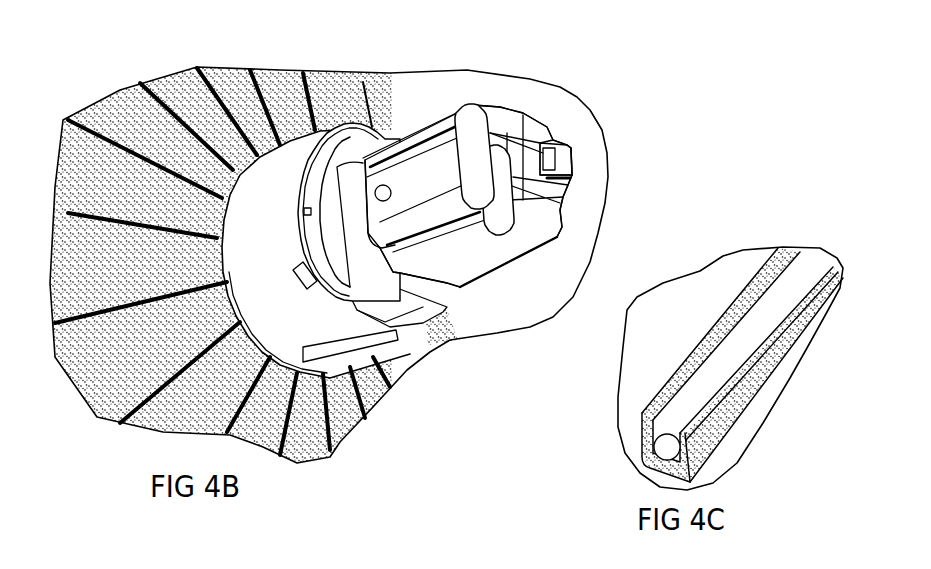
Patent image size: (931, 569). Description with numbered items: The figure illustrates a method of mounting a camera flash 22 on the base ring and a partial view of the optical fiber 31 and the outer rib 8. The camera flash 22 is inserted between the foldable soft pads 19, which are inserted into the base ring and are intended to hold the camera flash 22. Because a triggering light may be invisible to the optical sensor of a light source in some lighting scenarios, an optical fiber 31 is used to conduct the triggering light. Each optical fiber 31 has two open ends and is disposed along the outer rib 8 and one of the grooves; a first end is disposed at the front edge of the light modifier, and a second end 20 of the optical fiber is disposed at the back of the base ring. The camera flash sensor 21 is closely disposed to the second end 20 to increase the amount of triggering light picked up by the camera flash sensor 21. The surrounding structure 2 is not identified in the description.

In FIG. 4B, the structure 2 is at (137, 95).
In FIG. 4B, the foldable soft pads 19 is at (405, 315).
In FIG. 4B, the second end of the optical fiber 20 is at (306, 208).
In FIG. 4B, the camera flash sensor 21 is at (380, 185).
In FIG. 4B, the camera flash 22 is at (532, 158).
In FIG. 4C, the outer rib 8 is at (770, 363).
In FIG. 4C, the optical fiber 31 is at (690, 412).